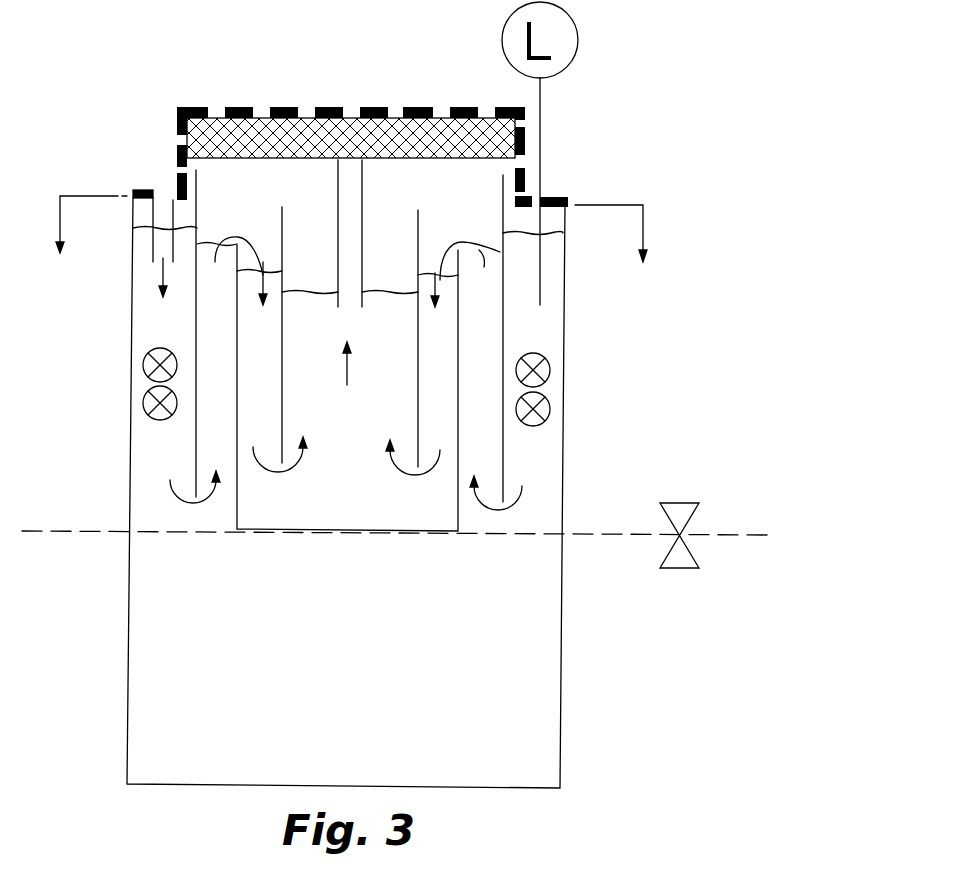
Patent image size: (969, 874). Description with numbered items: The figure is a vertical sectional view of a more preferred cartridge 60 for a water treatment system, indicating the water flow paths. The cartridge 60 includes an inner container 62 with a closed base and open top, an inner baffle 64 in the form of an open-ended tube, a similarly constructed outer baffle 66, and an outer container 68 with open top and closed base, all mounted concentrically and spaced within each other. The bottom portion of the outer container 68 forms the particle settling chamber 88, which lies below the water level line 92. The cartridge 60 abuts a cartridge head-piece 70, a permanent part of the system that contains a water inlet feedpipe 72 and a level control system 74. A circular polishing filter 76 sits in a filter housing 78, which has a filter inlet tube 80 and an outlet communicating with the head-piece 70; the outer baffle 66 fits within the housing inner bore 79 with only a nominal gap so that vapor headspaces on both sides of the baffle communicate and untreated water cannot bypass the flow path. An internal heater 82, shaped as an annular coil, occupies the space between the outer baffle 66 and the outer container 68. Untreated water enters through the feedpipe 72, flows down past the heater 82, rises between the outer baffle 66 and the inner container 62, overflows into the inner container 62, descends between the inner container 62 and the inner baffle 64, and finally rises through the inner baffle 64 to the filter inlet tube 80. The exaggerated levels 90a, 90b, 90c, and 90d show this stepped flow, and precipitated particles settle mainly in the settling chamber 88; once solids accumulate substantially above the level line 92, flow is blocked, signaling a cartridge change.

The cartridge 60 is at (674, 416).
The inner container 62 is at (320, 531).
The inner baffle 64 is at (282, 423).
The outer baffle 66 is at (502, 452).
The outer container 68 is at (560, 713).
The cartridge head-piece 70 is at (177, 107).
The water inlet feedpipe 72 is at (153, 229).
The level control system 74 is at (578, 32).
The polishing filter 76 is at (352, 118).
The filter housing 78 is at (490, 163).
The housing inner bore 79 is at (177, 167).
The filter inlet tube 80 is at (365, 184).
The internal heater 82 is at (552, 367).
The particle settling chamber 88 is at (165, 688).
The water level step 90a is at (550, 237).
The water level step 90b is at (495, 250).
The water level step 90c is at (450, 280).
The water level step 90d is at (385, 297).
The water level line 92 is at (690, 522).